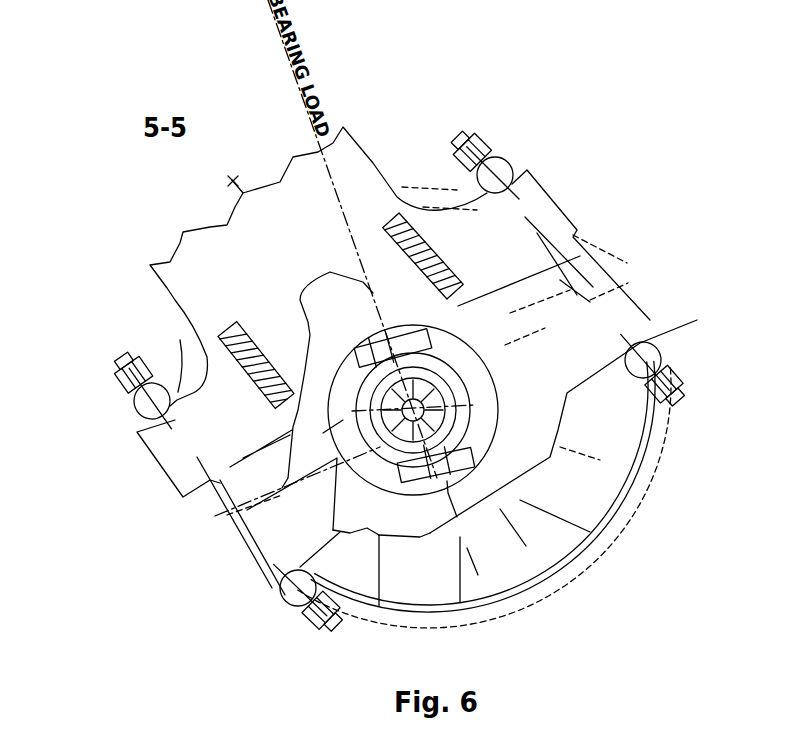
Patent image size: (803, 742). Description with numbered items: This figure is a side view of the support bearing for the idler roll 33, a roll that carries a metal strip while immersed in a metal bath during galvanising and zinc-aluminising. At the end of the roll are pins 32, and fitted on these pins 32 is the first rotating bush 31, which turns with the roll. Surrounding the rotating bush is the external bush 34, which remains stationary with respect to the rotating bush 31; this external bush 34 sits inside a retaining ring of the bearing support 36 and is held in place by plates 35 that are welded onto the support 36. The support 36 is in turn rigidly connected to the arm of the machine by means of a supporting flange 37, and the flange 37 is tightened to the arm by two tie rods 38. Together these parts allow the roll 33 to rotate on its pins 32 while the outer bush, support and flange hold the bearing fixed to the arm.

The first rotating bush 31 is at (462, 398).
The pins 32 is at (425, 382).
The idler roll 33 is at (592, 500).
The external bush 34 is at (463, 433).
The plates 35 is at (450, 460).
The bearing support 36 is at (333, 530).
The supporting flange 37 is at (213, 278).
The tie rods 38 is at (490, 143).